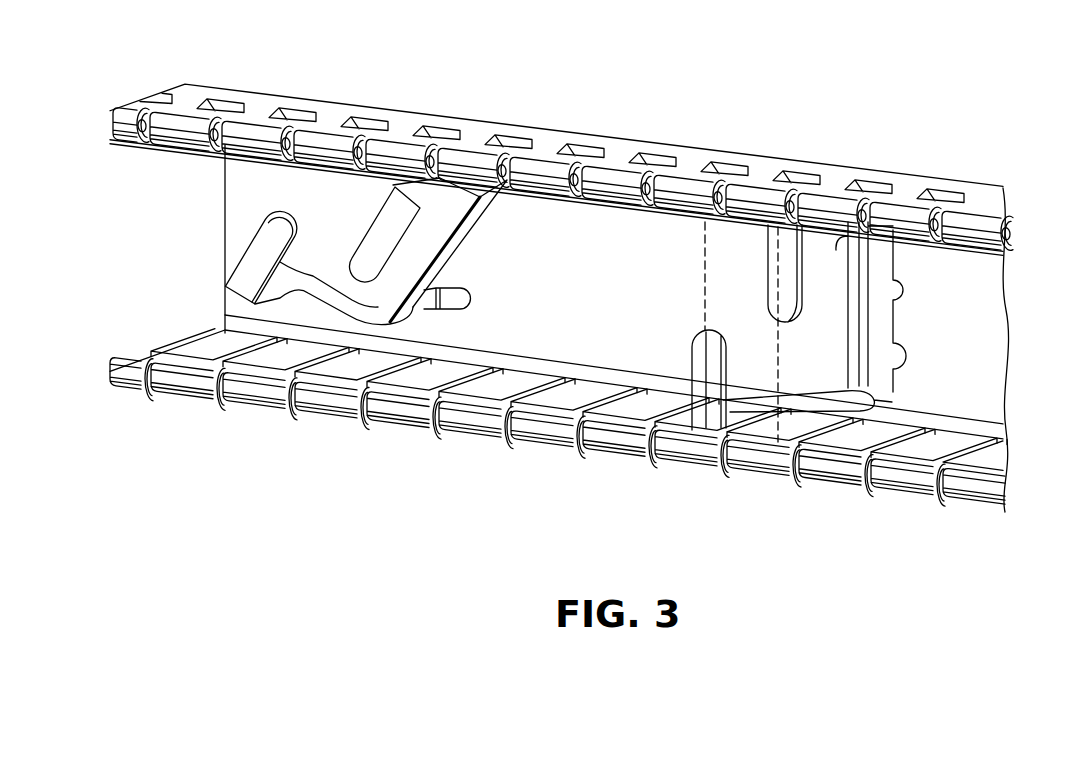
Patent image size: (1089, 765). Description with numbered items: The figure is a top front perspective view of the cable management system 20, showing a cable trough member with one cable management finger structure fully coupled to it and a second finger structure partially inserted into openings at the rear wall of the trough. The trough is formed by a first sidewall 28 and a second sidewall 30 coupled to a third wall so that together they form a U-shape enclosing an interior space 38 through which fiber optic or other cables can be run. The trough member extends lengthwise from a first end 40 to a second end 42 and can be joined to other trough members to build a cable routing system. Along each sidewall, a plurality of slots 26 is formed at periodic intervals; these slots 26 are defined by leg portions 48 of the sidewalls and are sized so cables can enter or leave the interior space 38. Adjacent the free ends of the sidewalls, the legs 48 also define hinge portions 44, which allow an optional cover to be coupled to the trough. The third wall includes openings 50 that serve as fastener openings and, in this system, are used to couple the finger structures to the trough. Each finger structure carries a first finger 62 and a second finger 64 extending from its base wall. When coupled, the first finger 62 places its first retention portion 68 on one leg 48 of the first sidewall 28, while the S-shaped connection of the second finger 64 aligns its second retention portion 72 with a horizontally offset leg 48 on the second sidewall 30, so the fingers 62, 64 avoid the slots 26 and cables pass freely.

The cable management system 20 is at (589, 280).
The slots 26 is at (765, 420).
The first sidewall 28 is at (693, 160).
The second sidewall 30 is at (637, 425).
The interior space 38 is at (597, 281).
The first end 40 is at (495, 273).
The second end 42 is at (1016, 323).
The hinge portions 44 is at (828, 210).
The leg portions 48 is at (750, 198).
The openings 50 is at (473, 303).
The first finger 62 is at (752, 290).
The second finger 64 is at (677, 334).
The first retention portion 68 is at (373, 230).
The second retention portion 72 is at (262, 232).